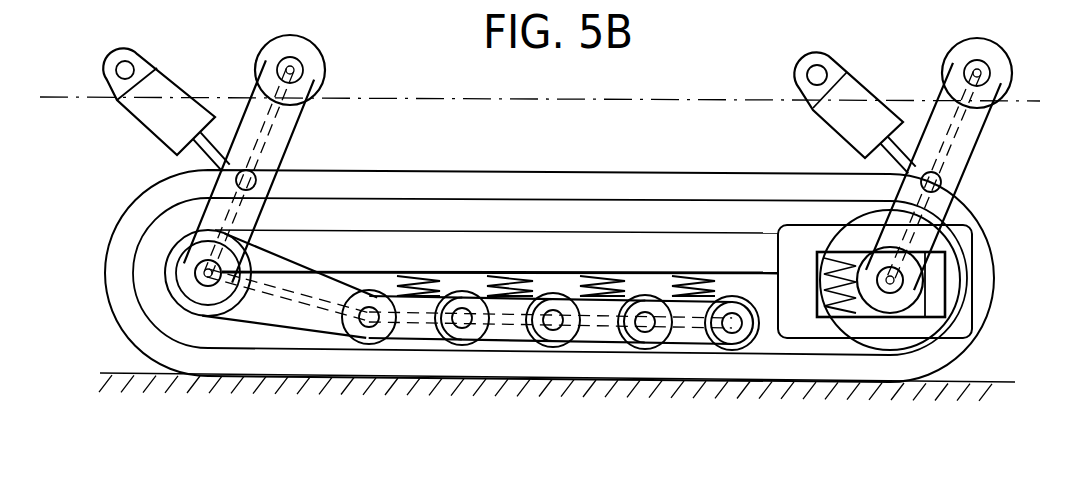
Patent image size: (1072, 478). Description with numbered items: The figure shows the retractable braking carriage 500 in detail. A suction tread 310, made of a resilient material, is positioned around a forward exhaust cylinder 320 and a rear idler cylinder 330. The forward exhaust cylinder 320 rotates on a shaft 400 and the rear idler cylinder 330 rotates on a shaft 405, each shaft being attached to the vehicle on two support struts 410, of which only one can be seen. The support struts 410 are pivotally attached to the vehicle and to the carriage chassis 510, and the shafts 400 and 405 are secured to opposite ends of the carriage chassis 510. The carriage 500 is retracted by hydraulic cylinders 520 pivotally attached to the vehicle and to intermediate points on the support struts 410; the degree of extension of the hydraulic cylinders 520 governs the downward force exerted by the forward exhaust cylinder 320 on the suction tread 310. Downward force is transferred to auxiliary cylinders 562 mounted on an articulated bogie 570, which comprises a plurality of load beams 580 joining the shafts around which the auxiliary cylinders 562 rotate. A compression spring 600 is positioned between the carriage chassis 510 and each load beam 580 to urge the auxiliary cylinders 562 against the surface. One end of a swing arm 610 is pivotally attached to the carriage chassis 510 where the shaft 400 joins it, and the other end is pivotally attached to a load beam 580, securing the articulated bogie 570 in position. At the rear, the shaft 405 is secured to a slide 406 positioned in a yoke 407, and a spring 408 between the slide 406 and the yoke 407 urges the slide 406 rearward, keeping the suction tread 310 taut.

The suction tread 310 is at (453, 200).
The forward exhaust cylinder 320 is at (160, 230).
The rear idler cylinder 330 is at (897, 347).
The shaft 400 is at (200, 268).
The shaft 405 is at (895, 278).
The slide 406 is at (863, 250).
The yoke 407 is at (817, 340).
The spring 408 is at (815, 263).
The support strut 410 is at (297, 124).
The retractable braking carriage 500 is at (676, 156).
The carriage chassis 510 is at (537, 237).
The hydraulic cylinder 520 is at (177, 92).
The auxiliary cylinder 562 is at (535, 345).
The articulated bogie 570 is at (610, 343).
The load beam 580 is at (398, 303).
The compression spring 600 is at (512, 266).
The swing arm 610 is at (303, 333).